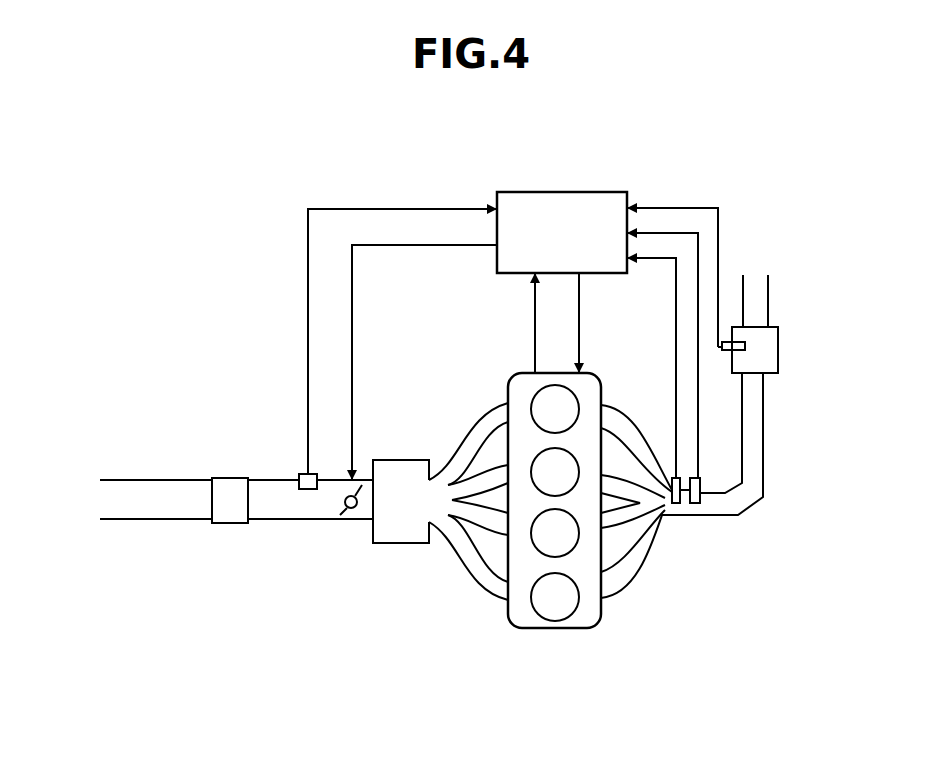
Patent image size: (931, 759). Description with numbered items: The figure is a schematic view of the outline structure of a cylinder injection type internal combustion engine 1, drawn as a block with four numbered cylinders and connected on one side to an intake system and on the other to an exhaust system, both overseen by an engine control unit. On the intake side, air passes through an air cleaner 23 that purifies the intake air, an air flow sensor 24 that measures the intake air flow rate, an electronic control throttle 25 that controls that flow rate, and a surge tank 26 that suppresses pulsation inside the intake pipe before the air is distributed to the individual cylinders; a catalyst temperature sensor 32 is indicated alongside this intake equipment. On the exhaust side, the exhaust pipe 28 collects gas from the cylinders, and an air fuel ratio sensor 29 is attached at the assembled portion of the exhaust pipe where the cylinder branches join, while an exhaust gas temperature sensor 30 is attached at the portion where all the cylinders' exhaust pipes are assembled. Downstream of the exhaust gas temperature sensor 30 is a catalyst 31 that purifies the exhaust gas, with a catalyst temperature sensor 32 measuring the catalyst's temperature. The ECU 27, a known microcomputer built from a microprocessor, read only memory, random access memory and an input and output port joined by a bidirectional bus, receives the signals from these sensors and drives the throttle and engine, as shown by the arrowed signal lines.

The internal combustion engine 1 is at (522, 628).
The air cleaner 23 is at (227, 523).
The air flow sensor 24 is at (300, 474).
The electronic control throttle 25 is at (343, 513).
The surge tank 26 is at (402, 543).
The ECU 27 is at (592, 190).
The exhaust pipe 28 is at (743, 505).
The air fuel ratio sensor 29 is at (676, 503).
The exhaust gas temperature sensor 30 is at (695, 503).
The catalyst 31 is at (763, 363).
The catalyst temperature sensor 32 is at (147, 478).